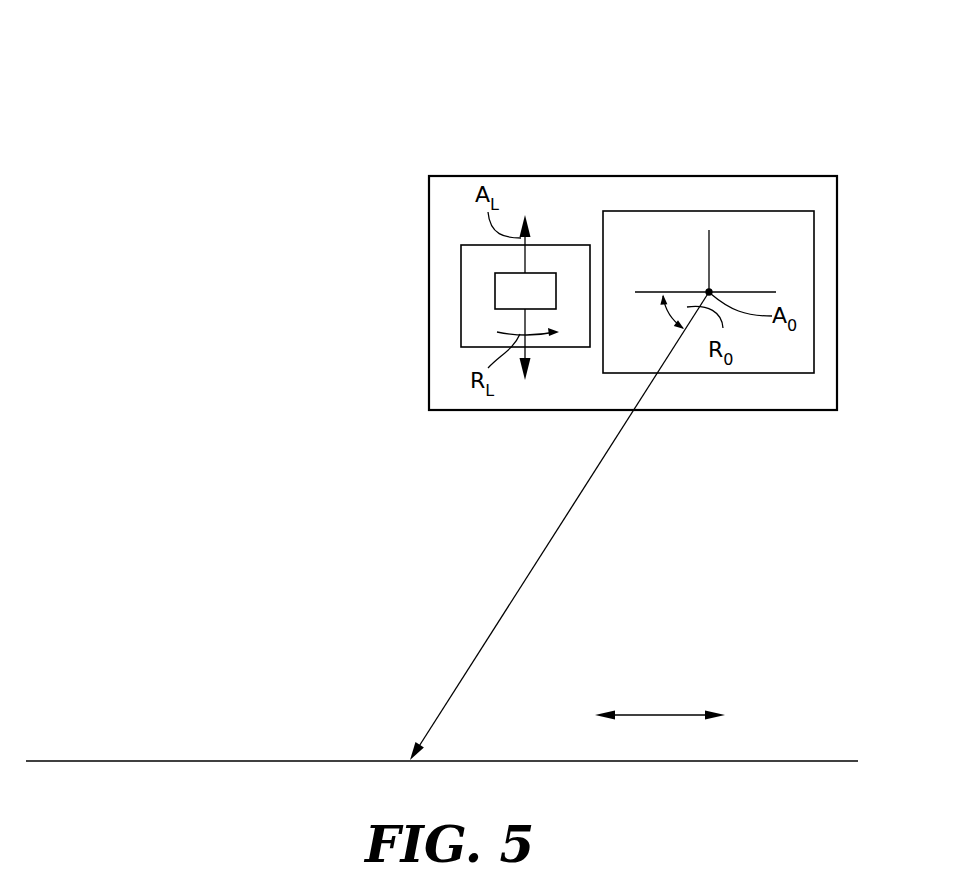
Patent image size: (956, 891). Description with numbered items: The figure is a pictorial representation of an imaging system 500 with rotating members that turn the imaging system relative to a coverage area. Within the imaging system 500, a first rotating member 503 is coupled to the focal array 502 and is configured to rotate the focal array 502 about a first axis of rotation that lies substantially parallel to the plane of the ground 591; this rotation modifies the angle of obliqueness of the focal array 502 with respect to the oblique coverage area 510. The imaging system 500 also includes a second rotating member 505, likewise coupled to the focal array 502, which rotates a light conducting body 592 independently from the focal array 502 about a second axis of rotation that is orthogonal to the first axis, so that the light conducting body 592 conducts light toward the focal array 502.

The imaging system 500 is at (757, 90).
The focal array 502 is at (799, 211).
The first rotating member 503 is at (709, 292).
The second rotating member 505 is at (547, 273).
The oblique coverage area 510 is at (168, 760).
The ground 591 is at (666, 713).
The light conducting body 592 is at (462, 297).